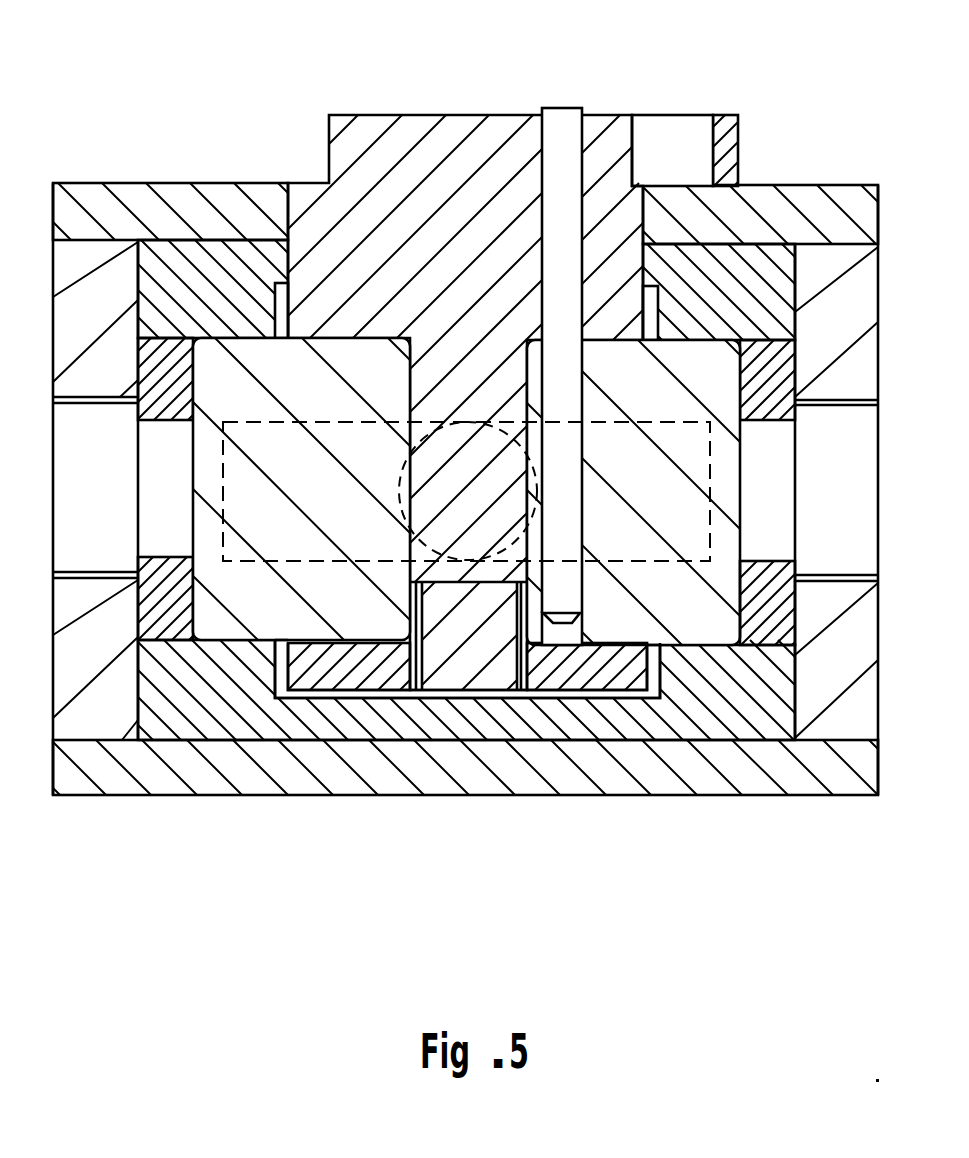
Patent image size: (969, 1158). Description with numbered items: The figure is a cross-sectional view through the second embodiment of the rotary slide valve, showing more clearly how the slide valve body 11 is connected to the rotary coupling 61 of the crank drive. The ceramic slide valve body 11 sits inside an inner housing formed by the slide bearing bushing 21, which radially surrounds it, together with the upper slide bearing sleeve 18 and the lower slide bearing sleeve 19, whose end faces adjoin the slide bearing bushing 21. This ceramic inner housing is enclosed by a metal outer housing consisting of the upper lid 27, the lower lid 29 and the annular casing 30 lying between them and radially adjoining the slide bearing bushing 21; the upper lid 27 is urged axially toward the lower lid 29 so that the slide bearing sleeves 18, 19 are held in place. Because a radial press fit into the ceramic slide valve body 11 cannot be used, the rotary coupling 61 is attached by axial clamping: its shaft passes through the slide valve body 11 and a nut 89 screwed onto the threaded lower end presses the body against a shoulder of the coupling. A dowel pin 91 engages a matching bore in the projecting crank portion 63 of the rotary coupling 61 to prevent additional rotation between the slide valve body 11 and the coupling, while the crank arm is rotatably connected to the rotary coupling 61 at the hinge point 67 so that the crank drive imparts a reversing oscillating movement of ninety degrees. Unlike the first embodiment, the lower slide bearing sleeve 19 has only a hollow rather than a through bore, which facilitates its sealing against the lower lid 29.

The annular casing 30 is at (107, 285).
The upper lid 27 is at (157, 214).
The slide valve body 11 is at (235, 397).
The rotary coupling 61 is at (357, 143).
The dowel pin 91 is at (558, 127).
The upper slide bearing sleeve 18 is at (672, 280).
The hinge point 67 is at (695, 130).
The crank portion 63 is at (730, 140).
The lower lid 29 is at (202, 765).
The lower slide bearing sleeve 19 is at (316, 720).
The nut 89 is at (373, 667).
The slide bearing bushing 21 is at (770, 607).